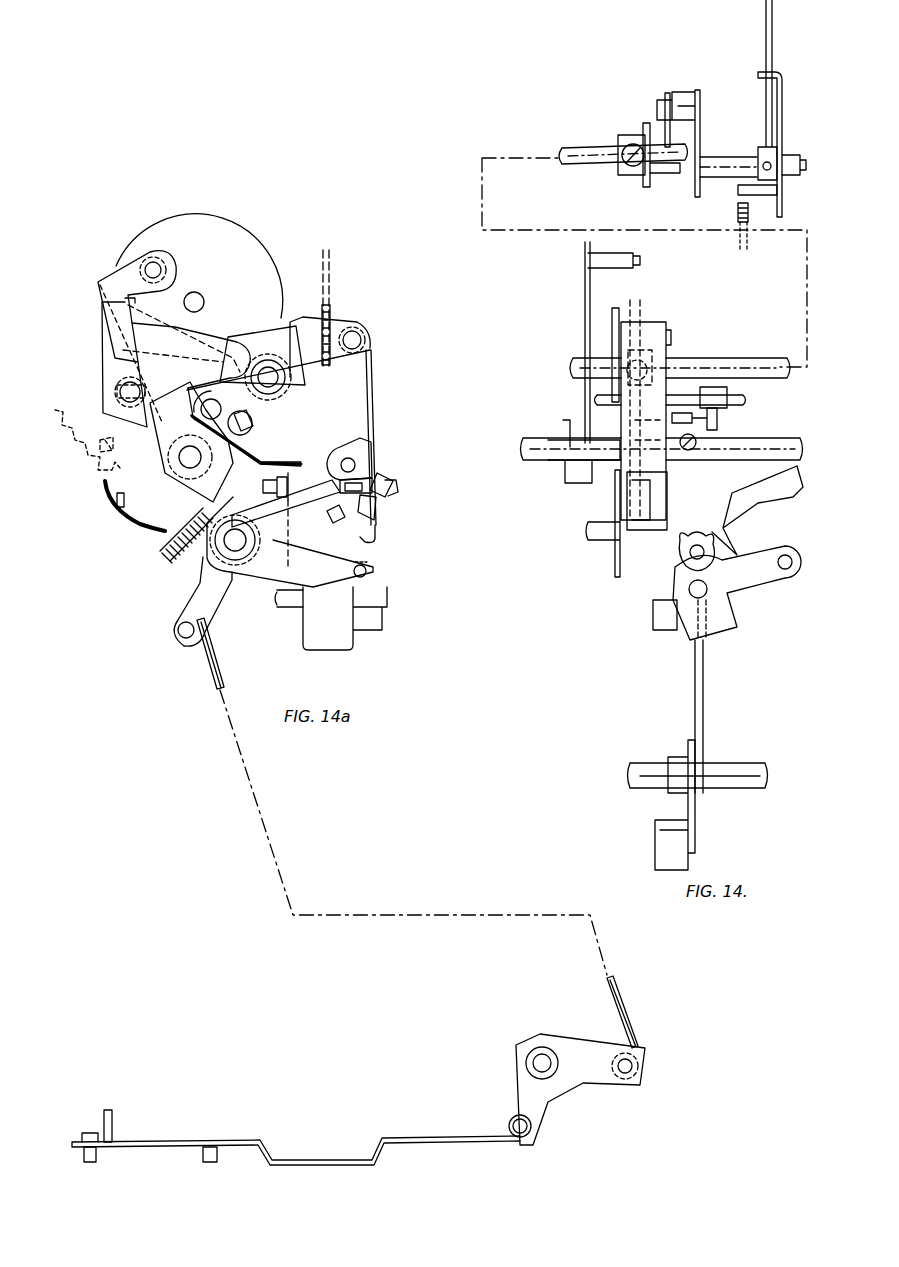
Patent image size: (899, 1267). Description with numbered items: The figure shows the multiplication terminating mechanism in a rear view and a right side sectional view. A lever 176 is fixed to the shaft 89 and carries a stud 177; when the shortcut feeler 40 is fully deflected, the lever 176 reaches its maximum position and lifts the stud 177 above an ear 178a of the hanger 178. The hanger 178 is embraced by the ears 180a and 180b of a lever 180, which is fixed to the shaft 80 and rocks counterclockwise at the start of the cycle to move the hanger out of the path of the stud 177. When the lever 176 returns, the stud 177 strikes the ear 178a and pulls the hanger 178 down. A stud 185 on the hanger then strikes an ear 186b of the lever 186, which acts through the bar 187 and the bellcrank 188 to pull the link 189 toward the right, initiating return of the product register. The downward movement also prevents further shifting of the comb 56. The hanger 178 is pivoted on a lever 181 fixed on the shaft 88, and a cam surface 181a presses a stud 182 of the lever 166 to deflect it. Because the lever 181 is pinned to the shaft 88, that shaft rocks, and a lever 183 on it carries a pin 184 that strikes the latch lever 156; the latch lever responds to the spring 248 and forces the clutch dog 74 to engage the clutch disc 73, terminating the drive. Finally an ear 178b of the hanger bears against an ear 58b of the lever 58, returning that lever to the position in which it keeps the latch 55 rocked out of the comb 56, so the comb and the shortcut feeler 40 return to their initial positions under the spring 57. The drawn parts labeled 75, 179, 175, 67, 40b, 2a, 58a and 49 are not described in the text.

In FIG. 14A, the clutch disc 73 is at (218, 240).
In FIG. 14, the clutch disc 73 is at (773, 40).
In FIG. 14A, the lever 166 is at (108, 285).
In FIG. 14A, the latch lever 156 is at (247, 338).
In FIG. 14, the latch lever 156 is at (667, 93).
In FIG. 14A, the stud 182 is at (224, 348).
In FIG. 14, the stud 182 is at (597, 343).
In FIG. 14A, the shaft 88 is at (270, 372).
In FIG. 14, the shaft 88 is at (577, 147).
In FIG. 14A, the rack rod 179 is at (330, 318).
In FIG. 14A, the lever 181 is at (345, 330).
In FIG. 14A, the clutch dog 74 is at (117, 358).
In FIG. 14, the clutch dog 74 is at (783, 90).
In FIG. 14A, the pivot 75 is at (120, 387).
In FIG. 14A, the hanger 178 is at (373, 400).
In FIG. 14, the hanger 178 is at (640, 430).
In FIG. 14A, the cam surface 181a is at (282, 418).
In FIG. 14A, the lever 58 is at (222, 410).
In FIG. 14, the lever 58 is at (722, 620).
In FIG. 14A, the spring 57 is at (252, 426).
In FIG. 14, the spring 57 is at (680, 410).
In FIG. 14A, the comb 56 is at (285, 462).
In FIG. 14, the comb 56 is at (550, 465).
In FIG. 14A, the shaft 80 is at (336, 456).
In FIG. 14A, the stud 185 is at (342, 493).
In FIG. 14A, the lever 180 is at (388, 490).
In FIG. 14A, the ear 180a is at (398, 500).
In FIG. 14A, the ear 178a is at (380, 515).
In FIG. 14A, the ear 178b is at (378, 538).
In FIG. 14A, the ear 180b is at (345, 504).
In FIG. 14A, the ear 186b is at (352, 523).
In FIG. 14, the ear 186b is at (620, 490).
In FIG. 14A, the lever 176 is at (367, 571).
In FIG. 14A, the stud 177 is at (365, 576).
In FIG. 14, the stud 177 is at (626, 565).
In FIG. 14A, the gear 2a is at (92, 458).
In FIG. 14A, the tab 40b is at (125, 492).
In FIG. 14A, the pivot 67 is at (185, 465).
In FIG. 14A, the shortcut feeler 40 is at (157, 519).
In FIG. 14A, the spring 175 is at (183, 538).
In FIG. 14A, the shaft 89 is at (232, 550).
In FIG. 14A, the lever 186 is at (215, 607).
In FIG. 14, the lever 186 is at (690, 632).
In FIG. 14A, the bar 187 is at (210, 665).
In FIG. 14A, the ear 58b is at (370, 630).
In FIG. 14, the ear 58b is at (653, 616).
In FIG. 14A, the bellcrank 188 is at (592, 1075).
In FIG. 14A, the link 189 is at (462, 1142).
In FIG. 14, the lever 183 is at (645, 128).
In FIG. 14, the pin 184 is at (665, 175).
In FIG. 14, the spring 248 is at (738, 213).
In FIG. 14, the latch 55 is at (790, 488).
In FIG. 14, the hub 58a is at (706, 550).
In FIG. 14, the pivot 49 is at (706, 593).